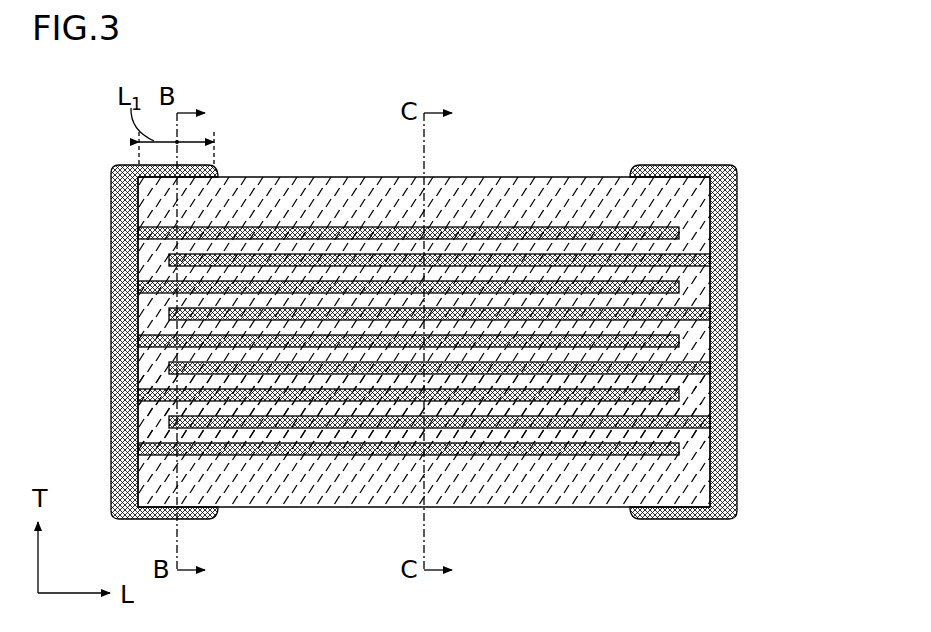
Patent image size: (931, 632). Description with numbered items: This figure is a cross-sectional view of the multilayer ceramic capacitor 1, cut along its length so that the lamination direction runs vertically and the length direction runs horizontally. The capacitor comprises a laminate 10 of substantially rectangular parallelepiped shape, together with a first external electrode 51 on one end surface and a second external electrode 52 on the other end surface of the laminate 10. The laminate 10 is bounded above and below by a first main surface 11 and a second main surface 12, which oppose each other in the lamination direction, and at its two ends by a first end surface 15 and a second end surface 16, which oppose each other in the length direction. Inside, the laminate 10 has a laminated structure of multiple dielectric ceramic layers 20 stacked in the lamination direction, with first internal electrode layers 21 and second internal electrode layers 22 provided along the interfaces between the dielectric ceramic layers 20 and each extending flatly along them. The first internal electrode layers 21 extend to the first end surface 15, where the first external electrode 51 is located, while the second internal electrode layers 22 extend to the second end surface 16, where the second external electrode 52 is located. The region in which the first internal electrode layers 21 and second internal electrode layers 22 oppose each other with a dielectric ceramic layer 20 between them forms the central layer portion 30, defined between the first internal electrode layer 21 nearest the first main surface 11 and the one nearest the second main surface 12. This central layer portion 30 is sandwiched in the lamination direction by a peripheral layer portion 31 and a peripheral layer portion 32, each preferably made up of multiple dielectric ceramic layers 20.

The multilayer ceramic capacitor 1 is at (83, 116).
The laminate 10 is at (455, 340).
The first main surface 11 is at (256, 176).
The second main surface 12 is at (586, 508).
The first end surface 15 is at (138, 371).
The second end surface 16 is at (710, 396).
The dielectric ceramic layers 20 is at (378, 383).
The first internal electrode layers 21 is at (364, 336).
The second internal electrode layers 22 is at (476, 309).
The central layer portion 30 is at (822, 228).
The peripheral layer portion 31 is at (737, 177).
The peripheral layer portion 32 is at (737, 456).
The first external electrode 51 is at (124, 215).
The second external electrode 52 is at (683, 172).